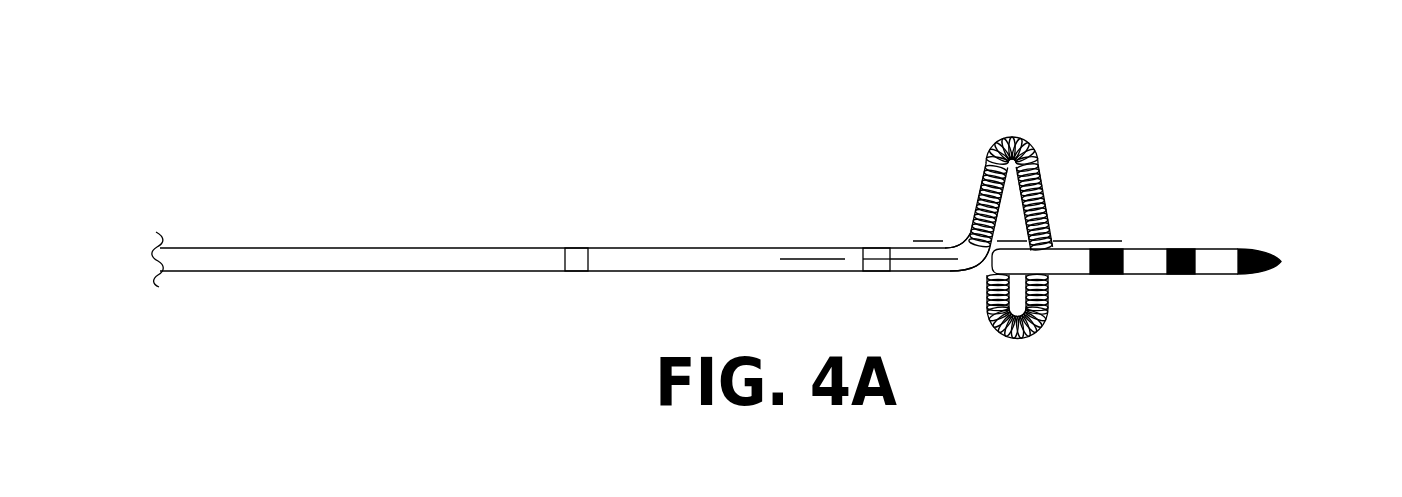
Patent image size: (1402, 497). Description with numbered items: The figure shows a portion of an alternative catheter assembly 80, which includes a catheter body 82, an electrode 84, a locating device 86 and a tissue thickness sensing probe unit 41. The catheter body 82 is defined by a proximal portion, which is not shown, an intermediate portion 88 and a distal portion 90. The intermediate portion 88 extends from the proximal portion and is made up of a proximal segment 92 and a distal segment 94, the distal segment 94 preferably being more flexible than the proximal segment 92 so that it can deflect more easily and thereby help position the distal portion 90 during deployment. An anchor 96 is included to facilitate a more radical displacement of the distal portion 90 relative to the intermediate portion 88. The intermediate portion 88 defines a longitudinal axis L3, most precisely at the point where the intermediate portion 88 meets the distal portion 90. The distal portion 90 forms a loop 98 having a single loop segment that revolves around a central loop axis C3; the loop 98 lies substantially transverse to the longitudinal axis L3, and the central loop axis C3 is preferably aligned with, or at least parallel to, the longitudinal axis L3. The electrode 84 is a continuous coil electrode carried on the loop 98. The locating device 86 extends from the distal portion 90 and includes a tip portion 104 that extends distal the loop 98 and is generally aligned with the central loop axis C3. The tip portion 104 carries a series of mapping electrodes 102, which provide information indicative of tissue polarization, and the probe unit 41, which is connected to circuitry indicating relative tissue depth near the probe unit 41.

The catheter assembly 80 is at (456, 116).
The catheter body 82 is at (345, 280).
The electrode 84 is at (1041, 148).
The locating device 86 is at (1194, 281).
The intermediate portion 88 is at (576, 247).
The distal portion 90 is at (966, 183).
The proximal segment 92 is at (372, 247).
The distal segment 94 is at (690, 272).
The anchor 96 is at (878, 272).
The loop 98 is at (1003, 135).
The mapping electrodes 102 is at (1108, 276).
The tip portion 104 is at (1207, 250).
The tissue thickness sensing probe unit 41 is at (1262, 252).
The longitudinal axis L3 is at (829, 257).
The central loop axis C3 is at (1103, 237).